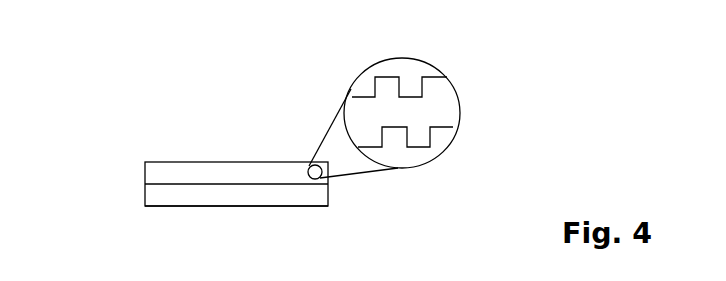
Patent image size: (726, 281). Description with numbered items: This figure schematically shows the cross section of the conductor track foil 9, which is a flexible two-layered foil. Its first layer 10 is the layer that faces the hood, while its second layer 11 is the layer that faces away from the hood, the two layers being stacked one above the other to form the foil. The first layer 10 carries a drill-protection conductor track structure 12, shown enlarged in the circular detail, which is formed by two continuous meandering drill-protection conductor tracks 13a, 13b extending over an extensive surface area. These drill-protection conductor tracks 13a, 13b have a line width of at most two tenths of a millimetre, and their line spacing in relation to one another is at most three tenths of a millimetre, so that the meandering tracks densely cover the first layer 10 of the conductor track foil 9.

The conductor track foil 9 is at (166, 160).
The first layer 10 is at (155, 173).
The second layer 11 is at (155, 195).
The drill-protection conductor track structure 12 is at (362, 86).
The drill-protection conductor track 13a is at (435, 78).
The drill-protection conductor track 13b is at (442, 130).